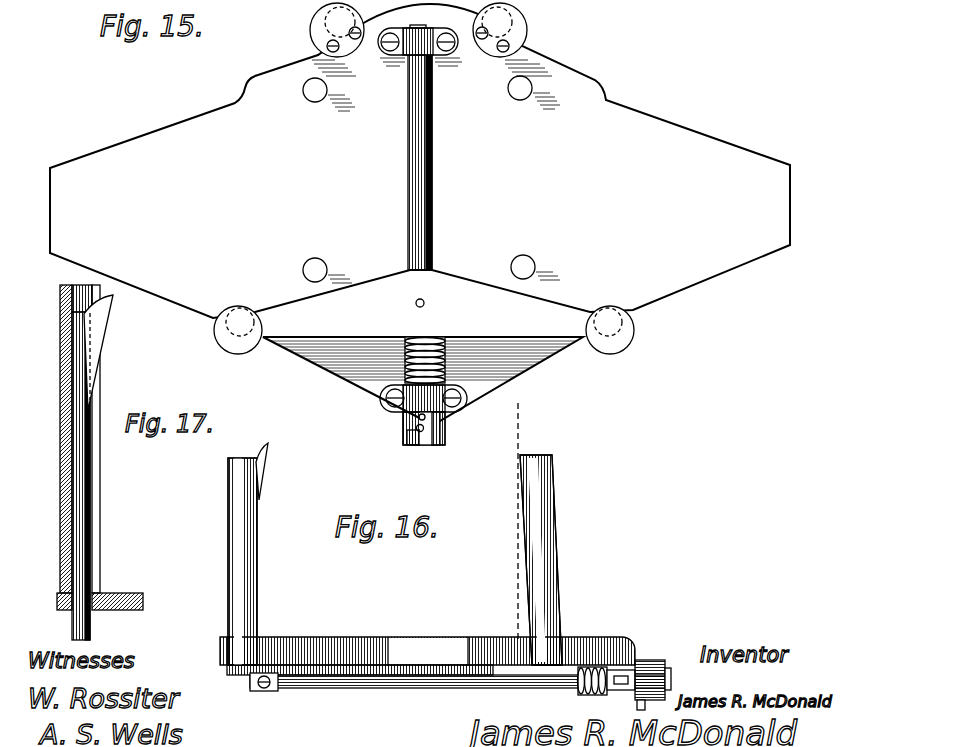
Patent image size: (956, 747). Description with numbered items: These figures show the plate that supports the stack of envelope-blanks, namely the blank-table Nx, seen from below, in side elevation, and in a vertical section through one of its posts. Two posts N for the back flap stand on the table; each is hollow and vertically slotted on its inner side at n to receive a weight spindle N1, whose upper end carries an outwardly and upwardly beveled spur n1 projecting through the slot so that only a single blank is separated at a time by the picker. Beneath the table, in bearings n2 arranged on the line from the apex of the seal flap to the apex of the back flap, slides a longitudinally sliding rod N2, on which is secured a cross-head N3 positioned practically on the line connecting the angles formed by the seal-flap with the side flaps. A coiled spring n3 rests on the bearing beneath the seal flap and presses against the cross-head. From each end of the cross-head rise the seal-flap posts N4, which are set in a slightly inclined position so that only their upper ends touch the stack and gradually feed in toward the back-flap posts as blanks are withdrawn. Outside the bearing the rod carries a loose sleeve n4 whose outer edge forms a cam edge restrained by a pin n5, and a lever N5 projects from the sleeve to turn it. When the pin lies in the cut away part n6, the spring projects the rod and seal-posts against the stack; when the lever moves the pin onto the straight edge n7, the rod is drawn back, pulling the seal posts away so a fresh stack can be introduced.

In FIG. 15, the post N is at (322, 47).
In FIG. 16, the post N is at (236, 538).
In FIG. 17, the post N is at (60, 368).
In FIG. 15, the blank-table Nx is at (420, 161).
In FIG. 17, the weight spindle N1 is at (85, 503).
In FIG. 15, the shaft / rod N2 is at (433, 200).
In FIG. 16, the shaft / rod N2 is at (397, 690).
In FIG. 15, the longitudinally sliding rod N3 is at (423, 362).
In FIG. 16, the longitudinally sliding rod N3 is at (492, 690).
In FIG. 16, the seal-flap post N4 is at (555, 518).
In FIG. 16, the lever N5 is at (640, 706).
In FIG. 17, the slot n is at (97, 410).
In FIG. 16, the spur n1 is at (262, 452).
In FIG. 17, the spur n1 is at (100, 345).
In FIG. 15, the bearing n2 is at (437, 58).
In FIG. 16, the bearing n2 is at (263, 692).
In FIG. 16, the coiled spring n3 is at (586, 696).
In FIG. 15, the loose sleeve n4 is at (445, 430).
In FIG. 16, the loose sleeve n4 is at (655, 666).
In FIG. 15, the pin n5 is at (442, 362).
In FIG. 15, the cut away part n6 is at (412, 427).
In FIG. 15, the straight edge n7 is at (437, 447).